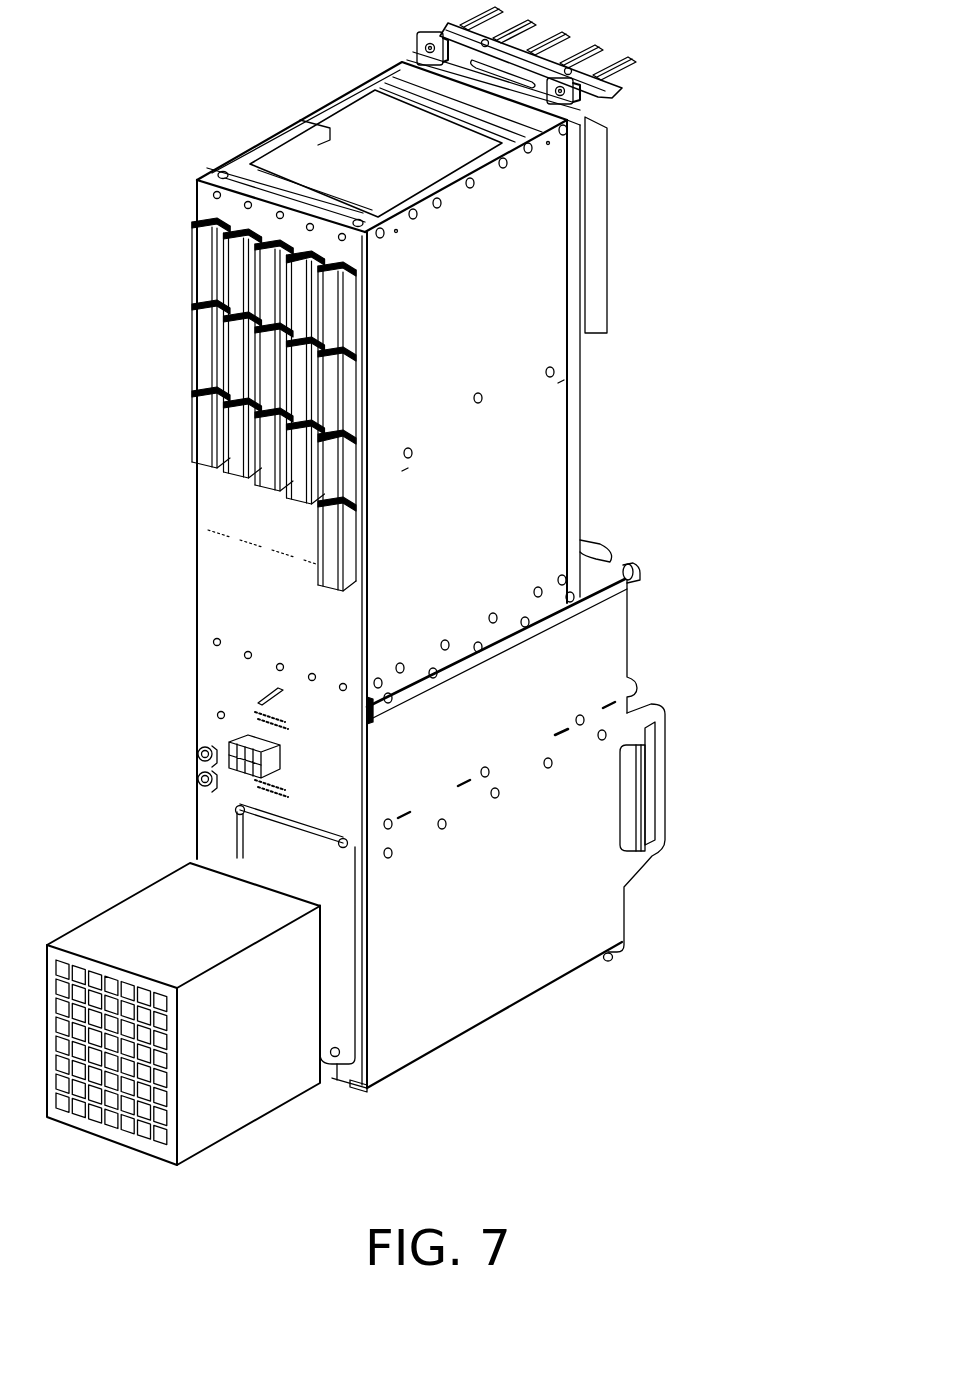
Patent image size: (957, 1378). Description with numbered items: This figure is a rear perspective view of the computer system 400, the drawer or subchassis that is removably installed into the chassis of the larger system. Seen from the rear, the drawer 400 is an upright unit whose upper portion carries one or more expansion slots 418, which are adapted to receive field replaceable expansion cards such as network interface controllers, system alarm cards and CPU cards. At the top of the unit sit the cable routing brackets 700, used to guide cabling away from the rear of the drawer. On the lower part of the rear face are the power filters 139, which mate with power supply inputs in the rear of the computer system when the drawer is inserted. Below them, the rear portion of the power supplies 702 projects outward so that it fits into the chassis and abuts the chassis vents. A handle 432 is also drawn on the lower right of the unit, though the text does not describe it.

The computer system 400 is at (728, 294).
The expansion slots 418 is at (378, 153).
The cable routing brackets 700 is at (598, 82).
The power filters 139 is at (232, 755).
The rear portion of power supplies 702 is at (158, 921).
The handle 432 is at (645, 860).